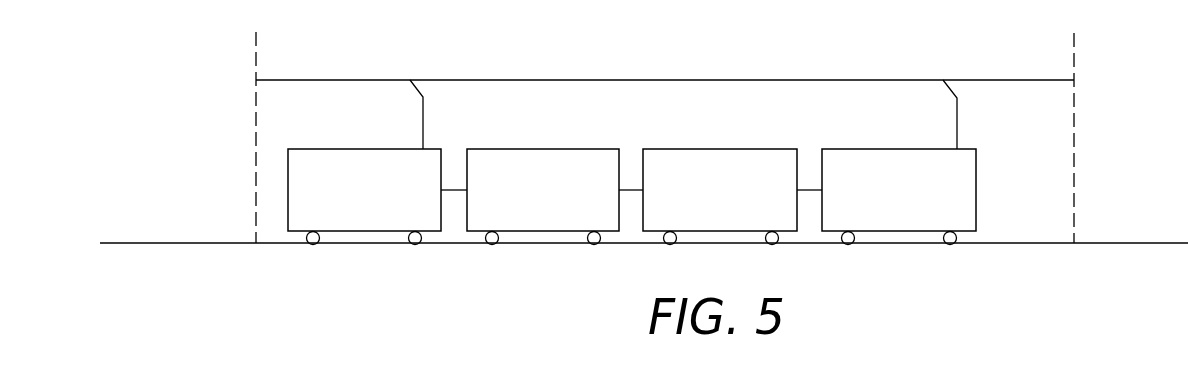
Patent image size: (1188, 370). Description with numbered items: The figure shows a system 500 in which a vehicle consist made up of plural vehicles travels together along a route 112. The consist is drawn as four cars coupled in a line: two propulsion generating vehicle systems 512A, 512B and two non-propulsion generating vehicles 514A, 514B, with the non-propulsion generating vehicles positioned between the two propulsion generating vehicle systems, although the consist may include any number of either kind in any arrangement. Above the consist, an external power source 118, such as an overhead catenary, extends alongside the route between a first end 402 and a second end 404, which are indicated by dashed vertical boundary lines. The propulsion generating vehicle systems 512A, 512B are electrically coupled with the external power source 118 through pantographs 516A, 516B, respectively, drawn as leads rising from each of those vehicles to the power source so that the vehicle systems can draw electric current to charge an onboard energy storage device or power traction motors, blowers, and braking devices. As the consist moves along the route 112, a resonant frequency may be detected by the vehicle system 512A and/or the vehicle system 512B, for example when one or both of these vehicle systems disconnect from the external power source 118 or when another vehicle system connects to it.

The system 500 is at (150, 50).
The route 112 is at (1137, 243).
The external power source 118 is at (674, 80).
The first end 402 is at (1074, 80).
The second end 404 is at (256, 80).
The vehicle system 512A is at (898, 148).
The vehicle system 512B is at (366, 148).
The vehicle 514A is at (721, 148).
The vehicle 514B is at (543, 148).
The pantograph 516A is at (957, 119).
The pantograph 516B is at (423, 119).